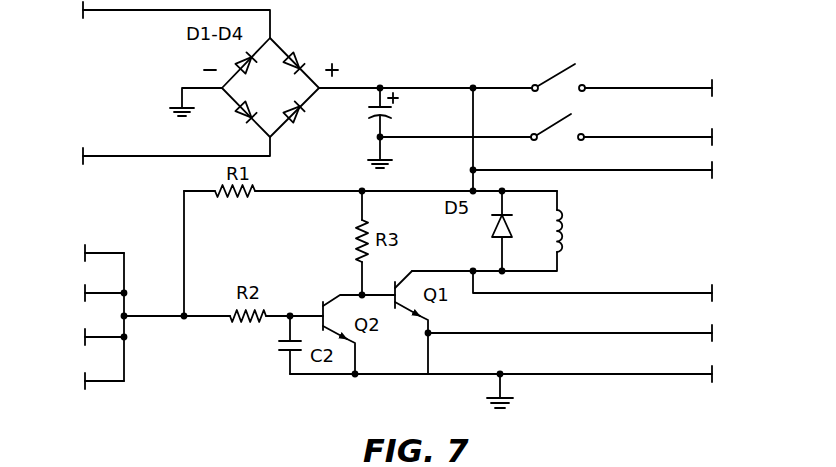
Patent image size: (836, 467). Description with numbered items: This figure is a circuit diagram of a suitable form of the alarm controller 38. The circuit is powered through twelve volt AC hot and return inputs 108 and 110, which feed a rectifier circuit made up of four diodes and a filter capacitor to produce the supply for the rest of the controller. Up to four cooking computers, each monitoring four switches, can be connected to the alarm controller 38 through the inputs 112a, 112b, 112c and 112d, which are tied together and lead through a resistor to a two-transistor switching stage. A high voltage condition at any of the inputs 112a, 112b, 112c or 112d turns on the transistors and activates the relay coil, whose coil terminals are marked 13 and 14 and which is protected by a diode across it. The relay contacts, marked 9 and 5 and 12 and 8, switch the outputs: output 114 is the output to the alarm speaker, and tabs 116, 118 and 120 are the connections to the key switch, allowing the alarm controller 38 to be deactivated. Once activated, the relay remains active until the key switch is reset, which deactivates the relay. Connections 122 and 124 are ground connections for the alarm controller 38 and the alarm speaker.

The alarm controller 38 is at (386, 50).
The hot input 108 is at (80, 22).
The return input 110 is at (80, 148).
The input 112a is at (80, 249).
The input 112b is at (80, 289).
The input 112c is at (80, 333).
The input 112d is at (81, 377).
The output 114 is at (637, 81).
The tab 116 is at (591, 133).
The tab 118 is at (720, 170).
The tab 120 is at (720, 291).
The ground connection 122 is at (720, 332).
The ground connection 124 is at (722, 373).
The relay contact 9 is at (524, 89).
The relay contact 5 is at (645, 99).
The relay contact 12 is at (475, 139).
The relay contact 8 is at (645, 149).
The relay coil terminal 13 is at (560, 211).
The relay coil terminal 14 is at (484, 272).